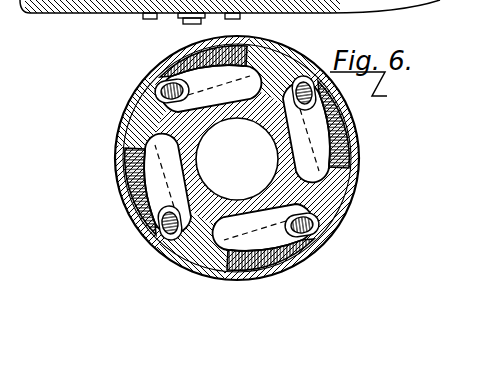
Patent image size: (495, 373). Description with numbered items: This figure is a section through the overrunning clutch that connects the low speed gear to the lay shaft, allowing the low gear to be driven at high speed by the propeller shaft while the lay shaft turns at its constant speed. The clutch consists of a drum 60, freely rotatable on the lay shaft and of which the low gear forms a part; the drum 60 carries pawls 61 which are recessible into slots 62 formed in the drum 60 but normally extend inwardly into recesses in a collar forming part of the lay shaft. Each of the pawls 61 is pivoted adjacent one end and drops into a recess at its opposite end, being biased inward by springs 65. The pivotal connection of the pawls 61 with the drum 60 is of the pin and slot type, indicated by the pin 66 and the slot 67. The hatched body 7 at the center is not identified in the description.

The hub body 7 is at (327, 187).
The outer ring 60 is at (134, 110).
The cam lobe 61 is at (205, 76).
The resilient insert 62 is at (205, 62).
The ring band 65 is at (222, 57).
The pin 66 is at (158, 90).
The slot 67 is at (170, 82).